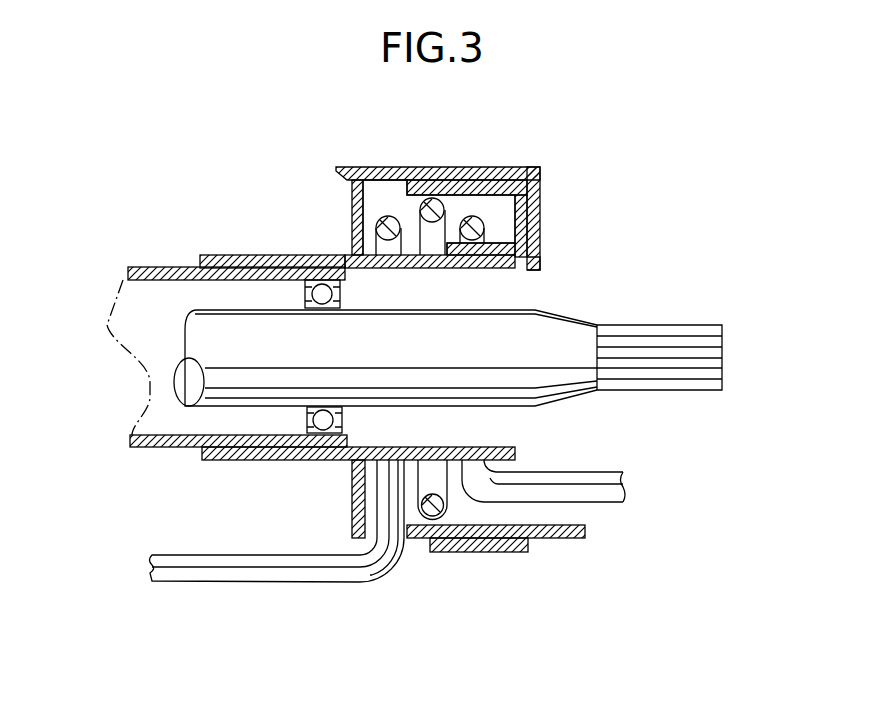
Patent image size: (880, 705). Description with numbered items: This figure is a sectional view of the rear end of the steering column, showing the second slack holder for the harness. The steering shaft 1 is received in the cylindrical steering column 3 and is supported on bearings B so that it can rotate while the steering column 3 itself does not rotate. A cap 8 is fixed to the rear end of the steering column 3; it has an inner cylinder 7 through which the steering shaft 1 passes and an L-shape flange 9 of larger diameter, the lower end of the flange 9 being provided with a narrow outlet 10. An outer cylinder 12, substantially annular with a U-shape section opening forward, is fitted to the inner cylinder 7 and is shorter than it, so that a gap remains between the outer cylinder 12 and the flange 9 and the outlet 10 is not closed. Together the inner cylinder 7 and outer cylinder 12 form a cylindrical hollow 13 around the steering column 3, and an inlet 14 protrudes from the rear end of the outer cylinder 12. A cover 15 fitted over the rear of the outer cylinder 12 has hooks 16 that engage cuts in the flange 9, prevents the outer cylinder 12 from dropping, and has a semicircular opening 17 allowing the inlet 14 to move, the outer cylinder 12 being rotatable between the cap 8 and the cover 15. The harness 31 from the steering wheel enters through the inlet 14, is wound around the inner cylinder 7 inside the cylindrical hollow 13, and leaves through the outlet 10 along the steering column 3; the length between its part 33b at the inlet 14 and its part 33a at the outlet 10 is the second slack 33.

The steering shaft 1 is at (655, 390).
The steering column 3 is at (158, 267).
The inner cylinder 7 is at (430, 268).
The cap 8 is at (270, 255).
The L-shape flange 9 is at (409, 319).
The outlet 10 is at (388, 540).
The outer cylinder 12 is at (507, 183).
The cylindrical hollow 13 is at (458, 203).
The inlet 14 is at (582, 525).
The cover 15 is at (540, 190).
The hooks 16 is at (347, 167).
The semicircular opening 17 is at (536, 272).
The harness 31 is at (620, 470).
The second slack 33 is at (388, 216).
The part of harness at outlet 33a is at (403, 560).
The part of harness at inlet 33b is at (473, 513).
The bearings B is at (297, 447).